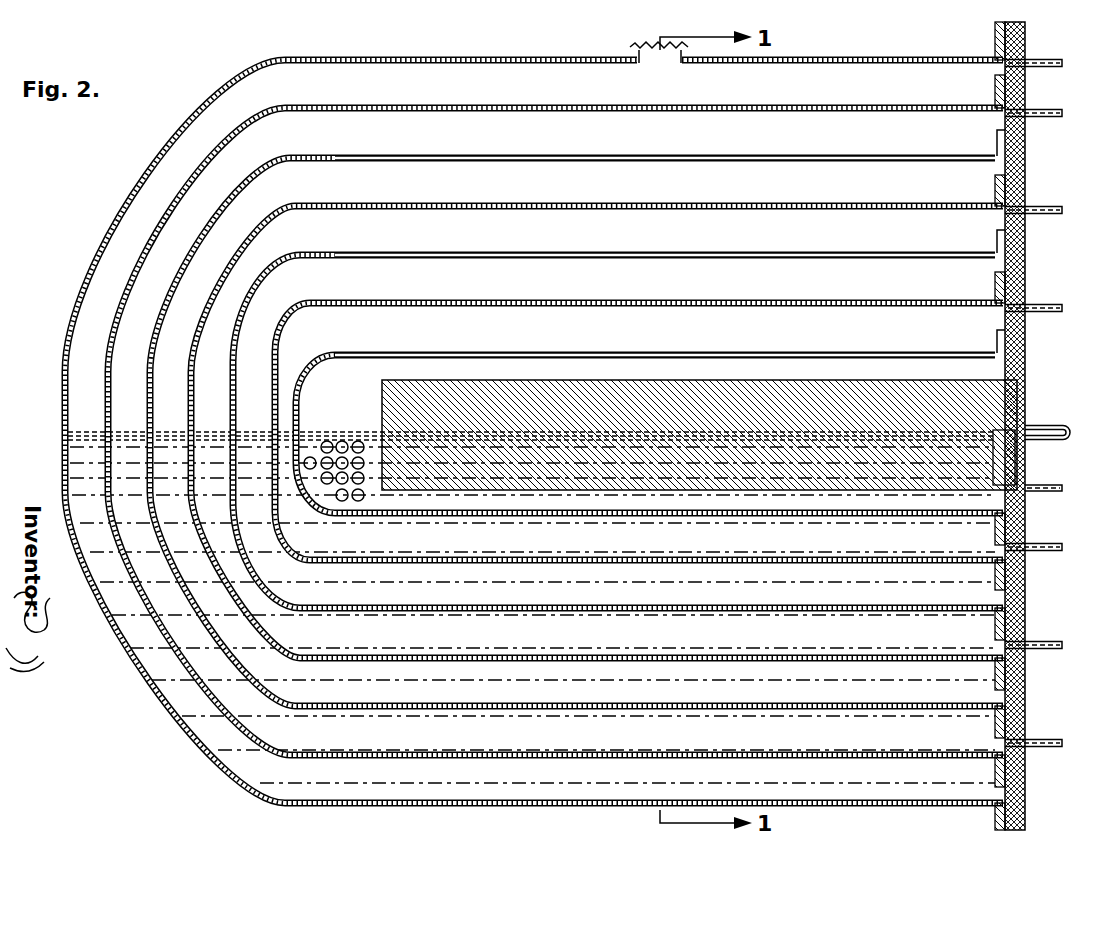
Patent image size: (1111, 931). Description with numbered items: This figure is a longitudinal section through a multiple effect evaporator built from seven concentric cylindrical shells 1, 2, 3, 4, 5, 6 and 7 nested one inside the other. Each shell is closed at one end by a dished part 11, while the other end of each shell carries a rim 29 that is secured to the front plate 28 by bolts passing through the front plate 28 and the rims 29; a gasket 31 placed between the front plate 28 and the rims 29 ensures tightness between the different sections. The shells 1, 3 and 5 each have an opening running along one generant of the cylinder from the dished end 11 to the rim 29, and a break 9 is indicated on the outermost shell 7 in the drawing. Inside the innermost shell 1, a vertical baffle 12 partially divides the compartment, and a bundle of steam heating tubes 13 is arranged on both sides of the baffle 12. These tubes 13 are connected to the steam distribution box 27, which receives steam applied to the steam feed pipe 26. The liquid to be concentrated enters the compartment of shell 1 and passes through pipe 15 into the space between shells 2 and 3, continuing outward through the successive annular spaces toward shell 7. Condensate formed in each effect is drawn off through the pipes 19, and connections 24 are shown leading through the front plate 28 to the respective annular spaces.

The concentric cylindrical shell 1 is at (381, 355).
The concentric cylindrical shell 2 is at (379, 299).
The concentric cylindrical shell 3 is at (379, 250).
The concentric cylindrical shell 4 is at (379, 202).
The concentric cylindrical shell 5 is at (379, 157).
The concentric cylindrical shell 6 is at (379, 107).
The concentric cylindrical shell 7 is at (379, 57).
The expansion joint / break 9 is at (630, 47).
The dished part 11 is at (119, 344).
The vertical baffle 12 is at (382, 398).
The bundle of steam heating tubes 13 is at (344, 439).
The pipe 15 is at (1071, 432).
The pipe 19 is at (1079, 743).
The inlet connection 24 is at (1079, 308).
The steam feed pipe 26 is at (1063, 488).
The steam distribution box 27 is at (1012, 468).
The front plate 28 is at (1026, 790).
The rim 29 is at (996, 818).
The gasket 31 is at (1025, 156).